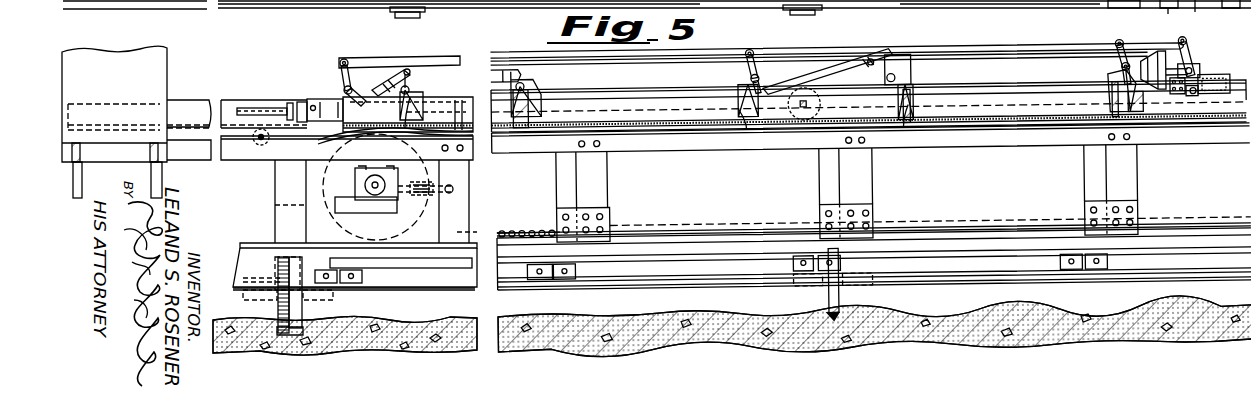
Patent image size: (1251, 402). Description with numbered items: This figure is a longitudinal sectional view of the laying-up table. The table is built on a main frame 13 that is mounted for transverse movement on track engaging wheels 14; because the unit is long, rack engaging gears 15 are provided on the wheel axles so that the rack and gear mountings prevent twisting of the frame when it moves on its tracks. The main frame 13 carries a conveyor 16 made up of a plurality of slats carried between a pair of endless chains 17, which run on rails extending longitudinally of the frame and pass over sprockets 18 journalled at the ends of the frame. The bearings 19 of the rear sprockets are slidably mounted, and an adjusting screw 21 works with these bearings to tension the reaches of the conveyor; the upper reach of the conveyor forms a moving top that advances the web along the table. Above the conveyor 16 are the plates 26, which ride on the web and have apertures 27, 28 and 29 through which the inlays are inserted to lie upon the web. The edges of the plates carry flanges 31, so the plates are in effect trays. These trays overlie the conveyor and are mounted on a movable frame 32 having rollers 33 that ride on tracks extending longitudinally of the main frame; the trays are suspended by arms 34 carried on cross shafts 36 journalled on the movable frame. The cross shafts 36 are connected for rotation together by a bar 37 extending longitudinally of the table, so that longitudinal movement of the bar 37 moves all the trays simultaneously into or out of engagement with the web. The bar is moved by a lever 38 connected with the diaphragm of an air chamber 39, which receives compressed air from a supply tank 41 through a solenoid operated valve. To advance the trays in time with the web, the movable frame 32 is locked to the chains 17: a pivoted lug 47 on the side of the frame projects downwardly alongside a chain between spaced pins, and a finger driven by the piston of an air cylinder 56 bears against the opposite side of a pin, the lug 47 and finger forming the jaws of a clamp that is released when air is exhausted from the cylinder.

The main frame 13 is at (665, 248).
The track engaging wheels 14 is at (302, 310).
The rack engaging gears 15 is at (277, 310).
The conveyor 16 is at (415, 133).
The endless chains 17 is at (530, 231).
The sprockets 18 is at (323, 184).
The bearings 19 is at (367, 200).
The adjusting screw 21 is at (453, 189).
The plates 26 is at (432, 122).
The aperture 27 is at (462, 124).
The aperture 28 is at (577, 128).
The aperture 29 is at (978, 122).
The flanges 31 is at (398, 132).
The movable frame 32 is at (851, 108).
The rollers 33 is at (800, 124).
The arms 34 is at (416, 94).
The cross shafts 36 is at (395, 78).
The bar 37 is at (363, 57).
The lever 38 is at (1195, 62).
The air chamber 39 is at (1160, 68).
The supply tank 41 is at (126, 79).
The lug 47 is at (1170, 13).
The air cylinder 56 is at (1217, 14).